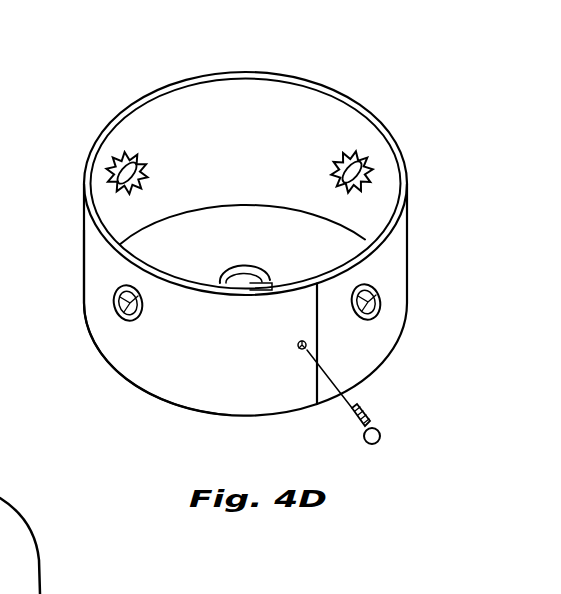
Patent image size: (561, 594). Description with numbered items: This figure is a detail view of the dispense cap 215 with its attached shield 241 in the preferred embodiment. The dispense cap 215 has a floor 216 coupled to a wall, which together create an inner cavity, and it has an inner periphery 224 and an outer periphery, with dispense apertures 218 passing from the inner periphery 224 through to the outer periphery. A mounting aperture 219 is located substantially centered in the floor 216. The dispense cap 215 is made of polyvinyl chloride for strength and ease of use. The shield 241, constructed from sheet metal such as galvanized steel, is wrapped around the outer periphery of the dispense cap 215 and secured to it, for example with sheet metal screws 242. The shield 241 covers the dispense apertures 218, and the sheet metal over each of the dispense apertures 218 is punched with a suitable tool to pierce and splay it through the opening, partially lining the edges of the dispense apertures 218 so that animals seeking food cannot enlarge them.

The dispense cap 215 is at (253, 100).
The floor 216 is at (238, 213).
The dispense apertures 218 is at (357, 160).
The mounting aperture 219 is at (242, 270).
The inner periphery 224 is at (165, 118).
The shield 241 is at (148, 358).
The sheet metal screws 242 is at (379, 446).